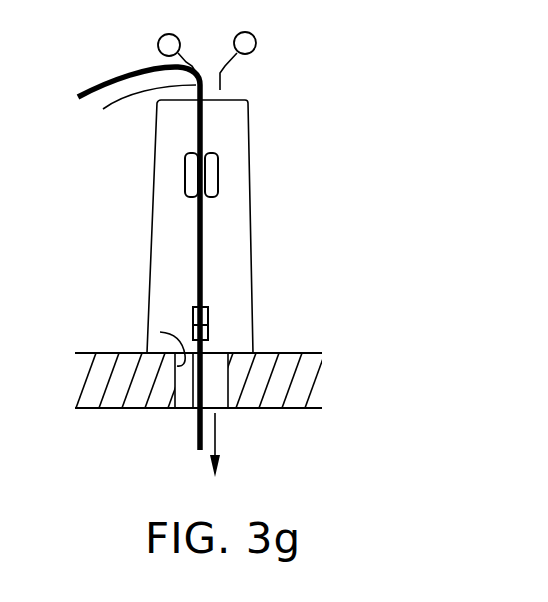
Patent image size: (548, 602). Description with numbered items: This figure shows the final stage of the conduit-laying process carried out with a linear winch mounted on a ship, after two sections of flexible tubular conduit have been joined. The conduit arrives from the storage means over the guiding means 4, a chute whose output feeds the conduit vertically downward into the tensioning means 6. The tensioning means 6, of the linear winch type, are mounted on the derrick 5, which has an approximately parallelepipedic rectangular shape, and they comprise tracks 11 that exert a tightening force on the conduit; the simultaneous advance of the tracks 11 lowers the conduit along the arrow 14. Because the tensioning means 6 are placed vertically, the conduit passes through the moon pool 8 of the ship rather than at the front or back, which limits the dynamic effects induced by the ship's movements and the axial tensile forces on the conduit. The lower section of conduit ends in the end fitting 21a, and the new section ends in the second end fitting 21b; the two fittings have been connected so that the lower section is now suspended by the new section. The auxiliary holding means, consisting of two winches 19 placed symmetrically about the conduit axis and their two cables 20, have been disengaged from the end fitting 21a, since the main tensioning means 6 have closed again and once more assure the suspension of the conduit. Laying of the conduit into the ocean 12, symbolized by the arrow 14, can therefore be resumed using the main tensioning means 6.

The guiding means 4 is at (128, 92).
The derrick 5 is at (150, 170).
The tensioning means 6 is at (253, 184).
The moon pool 8 is at (160, 332).
The tracks 11 is at (213, 187).
The ocean 12 is at (157, 457).
The arrow 14 is at (228, 427).
The winches 19 is at (242, 40).
The cables 20 is at (228, 63).
The end fitting 21a is at (208, 333).
The second end fitting 21b is at (193, 312).